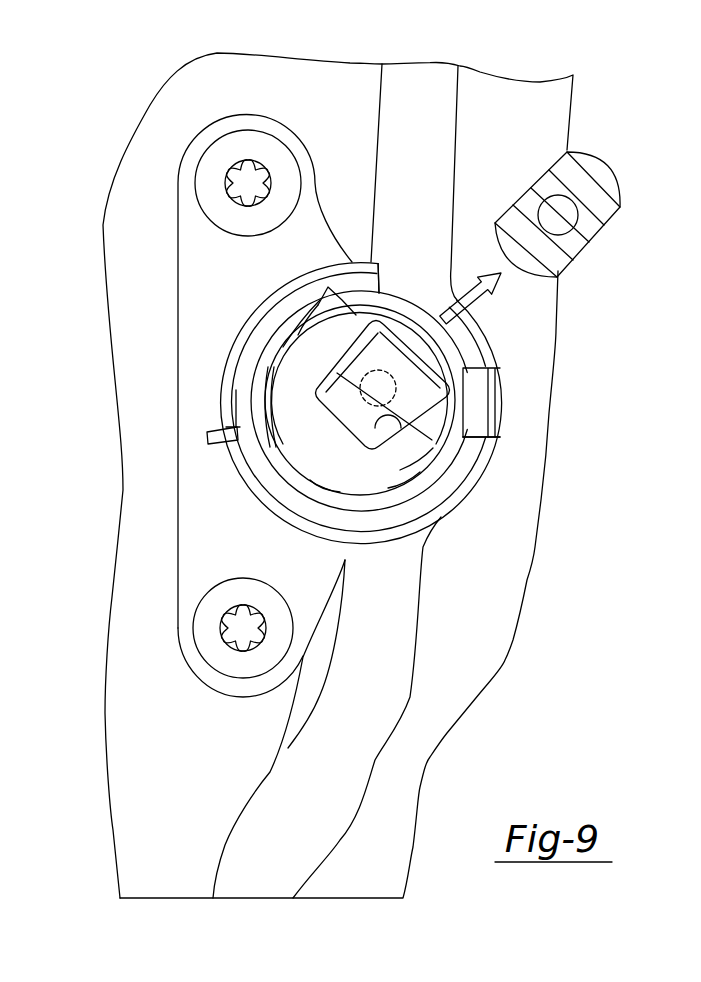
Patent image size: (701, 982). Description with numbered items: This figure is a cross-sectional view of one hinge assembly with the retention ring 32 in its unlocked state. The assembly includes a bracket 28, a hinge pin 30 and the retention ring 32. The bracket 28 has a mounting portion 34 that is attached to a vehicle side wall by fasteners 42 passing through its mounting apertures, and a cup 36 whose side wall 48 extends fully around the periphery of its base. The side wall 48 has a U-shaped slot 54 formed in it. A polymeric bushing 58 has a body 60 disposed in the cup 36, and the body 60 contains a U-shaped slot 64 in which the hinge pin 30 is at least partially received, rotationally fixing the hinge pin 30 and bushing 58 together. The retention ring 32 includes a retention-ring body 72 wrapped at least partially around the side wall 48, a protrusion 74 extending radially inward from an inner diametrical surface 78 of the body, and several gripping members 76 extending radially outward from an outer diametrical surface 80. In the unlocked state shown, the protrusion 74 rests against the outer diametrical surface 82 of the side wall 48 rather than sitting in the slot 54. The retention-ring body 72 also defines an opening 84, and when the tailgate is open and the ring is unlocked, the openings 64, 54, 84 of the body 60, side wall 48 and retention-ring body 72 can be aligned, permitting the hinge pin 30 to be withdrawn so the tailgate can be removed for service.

The bracket 28 is at (172, 577).
The hinge pin 30 is at (602, 195).
The retention ring 32 is at (362, 258).
The mounting portion 34 is at (318, 171).
The cup 36 is at (490, 430).
The fastener 42 is at (250, 153).
The side wall 48 is at (466, 403).
The slot 54 is at (413, 312).
The bushing 58 is at (392, 482).
The body 60 is at (313, 458).
The slot 64 is at (365, 445).
The retention-ring body 72 is at (242, 413).
The protrusion 74 is at (300, 325).
The gripping members 76 is at (203, 435).
The inner diametrical surface 78 is at (280, 347).
The outer diametrical surface 80 is at (243, 348).
The outer diametrical surface 82 is at (257, 390).
The opening 84 is at (465, 338).